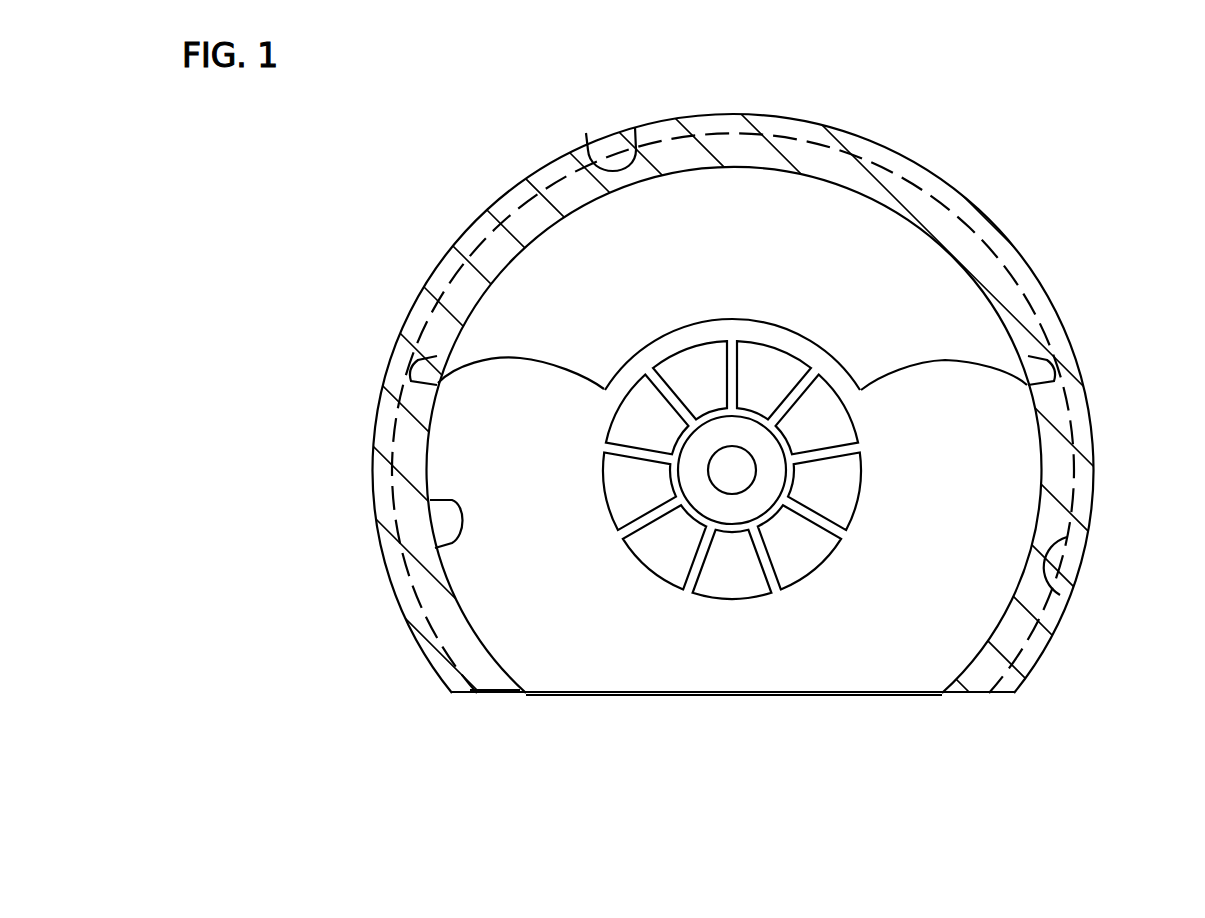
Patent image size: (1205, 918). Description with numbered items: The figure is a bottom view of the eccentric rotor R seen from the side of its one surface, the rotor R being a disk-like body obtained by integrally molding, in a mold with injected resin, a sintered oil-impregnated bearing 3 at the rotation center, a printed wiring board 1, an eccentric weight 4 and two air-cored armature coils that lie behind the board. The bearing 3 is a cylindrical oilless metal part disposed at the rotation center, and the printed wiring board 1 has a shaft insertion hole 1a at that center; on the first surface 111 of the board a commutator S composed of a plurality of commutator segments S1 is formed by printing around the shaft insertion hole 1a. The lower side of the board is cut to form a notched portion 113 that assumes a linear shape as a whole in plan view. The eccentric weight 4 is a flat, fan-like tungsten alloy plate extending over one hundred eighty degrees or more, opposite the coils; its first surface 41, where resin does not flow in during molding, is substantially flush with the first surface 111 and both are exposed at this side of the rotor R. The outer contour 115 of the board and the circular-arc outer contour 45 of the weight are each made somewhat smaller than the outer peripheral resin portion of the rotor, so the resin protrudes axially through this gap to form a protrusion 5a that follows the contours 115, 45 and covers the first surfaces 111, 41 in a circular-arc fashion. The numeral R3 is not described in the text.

The eccentric rotor R is at (428, 285).
The outer circumferential surface of ring R3 is at (877, 143).
The first surface of the eccentric weight 41 is at (548, 300).
The outer contour of the circular-arc portion 45 is at (635, 127).
The eccentric weight 4 is at (945, 313).
The commutator segments S1 is at (603, 427).
The protrusion 5a is at (435, 548).
The outer contour of the printed wiring board 115 is at (1060, 595).
The printed wiring board 1 is at (842, 665).
The notched portion 113 is at (605, 697).
The first surface of the printed wiring board 111 is at (520, 593).
The sintered oil-impregnated bearing 3 is at (694, 506).
The shaft insertion hole 1a is at (783, 470).
The commutator S is at (730, 625).